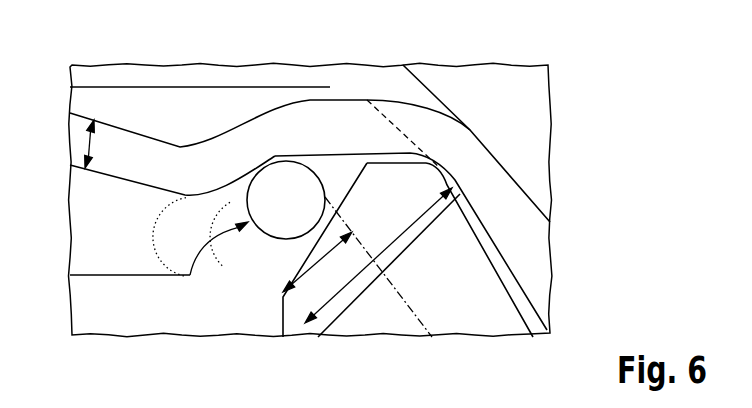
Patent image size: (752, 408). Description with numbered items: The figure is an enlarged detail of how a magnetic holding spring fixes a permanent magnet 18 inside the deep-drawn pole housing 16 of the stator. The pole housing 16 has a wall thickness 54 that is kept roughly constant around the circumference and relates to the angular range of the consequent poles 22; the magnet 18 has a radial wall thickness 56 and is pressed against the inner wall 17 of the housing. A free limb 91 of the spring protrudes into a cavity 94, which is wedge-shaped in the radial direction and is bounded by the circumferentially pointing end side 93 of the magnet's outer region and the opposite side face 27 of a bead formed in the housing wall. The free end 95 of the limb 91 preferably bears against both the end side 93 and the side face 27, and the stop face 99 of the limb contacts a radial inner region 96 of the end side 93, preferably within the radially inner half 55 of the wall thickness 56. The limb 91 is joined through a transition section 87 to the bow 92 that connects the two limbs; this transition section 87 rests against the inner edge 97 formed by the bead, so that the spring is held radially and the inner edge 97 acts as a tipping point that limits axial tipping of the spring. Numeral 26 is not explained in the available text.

The consequent pole 22 is at (118, 148).
The annular channel 26 is at (118, 148).
The inner edge 97 is at (187, 181).
The side face of the bead 27 is at (272, 160).
The cavity 94 is at (322, 163).
The end side 93 is at (347, 183).
The stop face 99 is at (367, 100).
The wall thickness 54 is at (89, 140).
The bow 92 is at (95, 216).
The transition section 87 is at (180, 222).
The pole housing 16 is at (482, 172).
The inner wall 17 is at (528, 246).
The permanent magnet 18 is at (473, 307).
The free limb 91 is at (190, 275).
The free end 95 is at (250, 232).
The radial inner region 96 is at (270, 236).
The radially inner half 55 is at (285, 305).
The radial wall thickness 56 is at (366, 292).